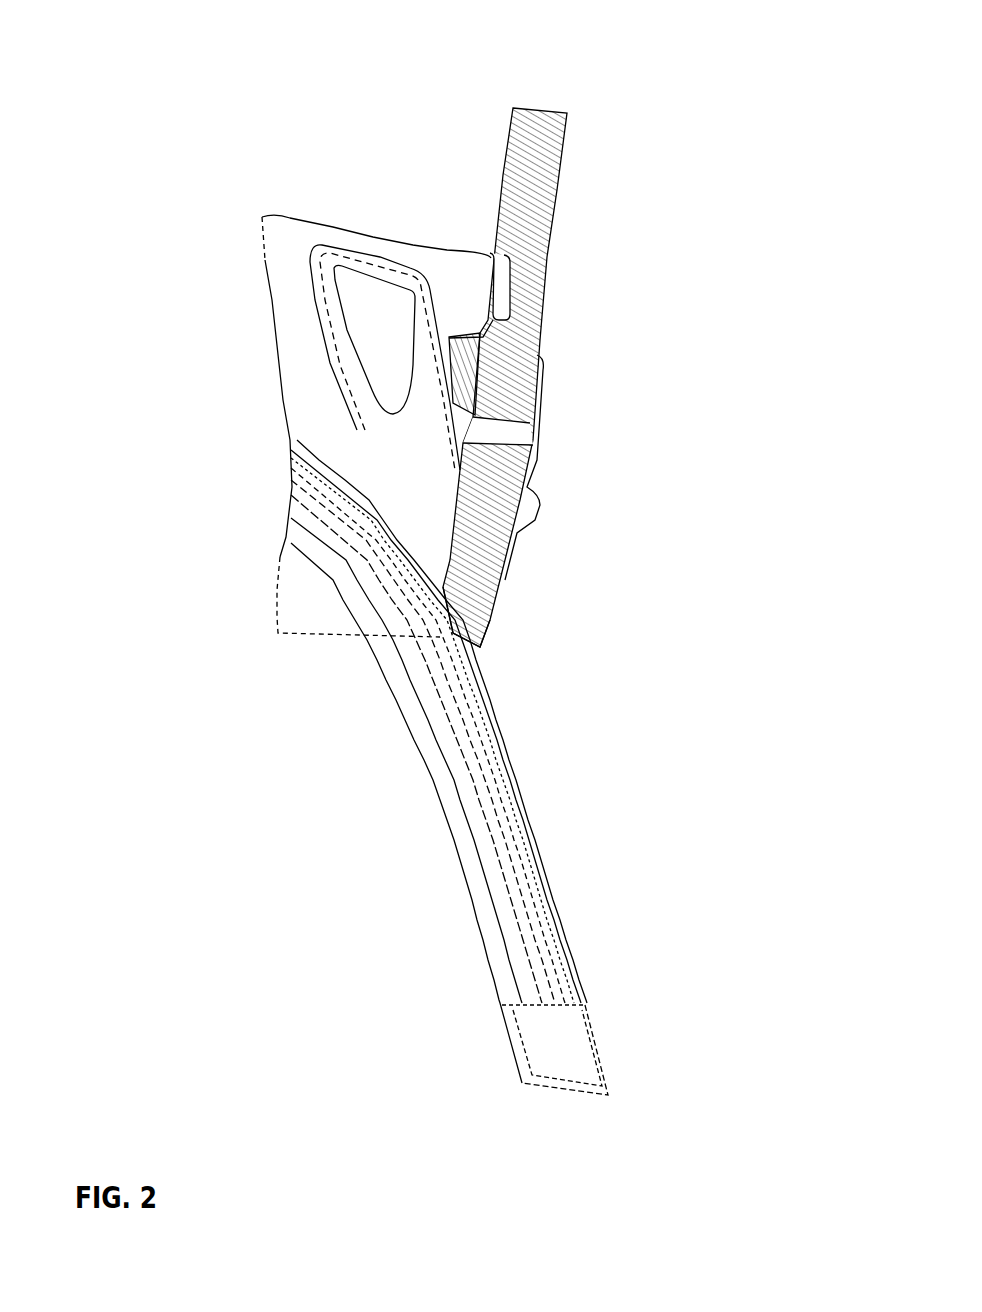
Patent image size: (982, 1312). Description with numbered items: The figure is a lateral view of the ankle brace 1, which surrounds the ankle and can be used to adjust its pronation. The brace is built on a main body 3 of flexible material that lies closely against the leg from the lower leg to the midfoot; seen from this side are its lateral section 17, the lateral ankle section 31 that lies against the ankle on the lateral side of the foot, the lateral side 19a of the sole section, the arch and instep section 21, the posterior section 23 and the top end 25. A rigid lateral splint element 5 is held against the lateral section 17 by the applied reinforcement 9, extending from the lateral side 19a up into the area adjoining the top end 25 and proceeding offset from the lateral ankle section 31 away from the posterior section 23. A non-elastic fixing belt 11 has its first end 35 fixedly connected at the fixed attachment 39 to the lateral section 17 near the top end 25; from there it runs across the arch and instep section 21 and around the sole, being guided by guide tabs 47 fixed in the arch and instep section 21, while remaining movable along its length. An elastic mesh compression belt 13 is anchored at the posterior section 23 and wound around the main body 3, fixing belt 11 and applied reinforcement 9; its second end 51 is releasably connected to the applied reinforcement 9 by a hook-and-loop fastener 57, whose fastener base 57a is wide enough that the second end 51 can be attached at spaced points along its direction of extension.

The ankle brace 1 is at (336, 153).
The main body 3 is at (293, 276).
The lateral splint element 5 is at (405, 452).
The applied reinforcement 9 is at (336, 362).
The fixing belt 11 is at (476, 518).
The compression belt 13 is at (352, 761).
The lateral section 17 is at (430, 545).
The lateral side of the sole section 19a is at (480, 627).
The arch and instep section 21 is at (540, 505).
The posterior section 23 is at (302, 492).
The top end 25 is at (322, 243).
The lateral ankle section 31 is at (367, 546).
The first end of the fixing belt 35 is at (618, 355).
The fixed attachment 39 is at (462, 363).
The guide tabs 47 is at (497, 437).
The second end of the compression belt 51 is at (644, 1050).
The hook-and-loop fastener 57 is at (552, 1040).
The hook-and-loop fastener base 57a is at (383, 318).